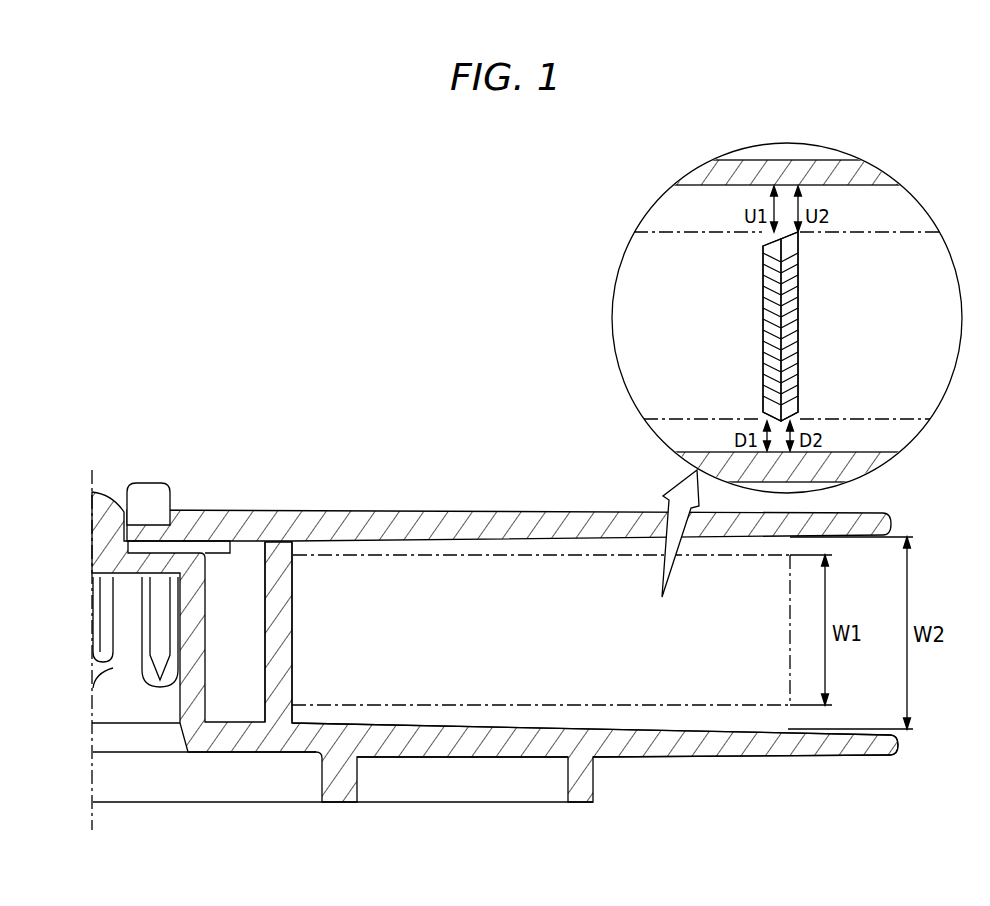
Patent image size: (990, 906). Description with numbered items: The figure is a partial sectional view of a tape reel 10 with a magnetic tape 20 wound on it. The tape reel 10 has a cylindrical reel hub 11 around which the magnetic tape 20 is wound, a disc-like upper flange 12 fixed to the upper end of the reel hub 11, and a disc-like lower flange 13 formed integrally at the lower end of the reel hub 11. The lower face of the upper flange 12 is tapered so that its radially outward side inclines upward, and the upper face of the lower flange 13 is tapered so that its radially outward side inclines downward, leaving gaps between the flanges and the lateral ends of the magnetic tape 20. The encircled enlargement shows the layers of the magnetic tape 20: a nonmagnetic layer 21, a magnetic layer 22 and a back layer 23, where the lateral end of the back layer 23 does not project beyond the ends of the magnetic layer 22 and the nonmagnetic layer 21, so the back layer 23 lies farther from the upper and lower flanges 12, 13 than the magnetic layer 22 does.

The tape reel 10 is at (272, 379).
The reel hub 11 is at (303, 605).
The upper flange 12 is at (527, 511).
The lower flange 13 is at (700, 757).
The magnetic tape 20 is at (445, 546).
The nonmagnetic layer 21 is at (787, 326).
The magnetic layer 22 is at (798, 336).
The back layer 23 is at (764, 309).